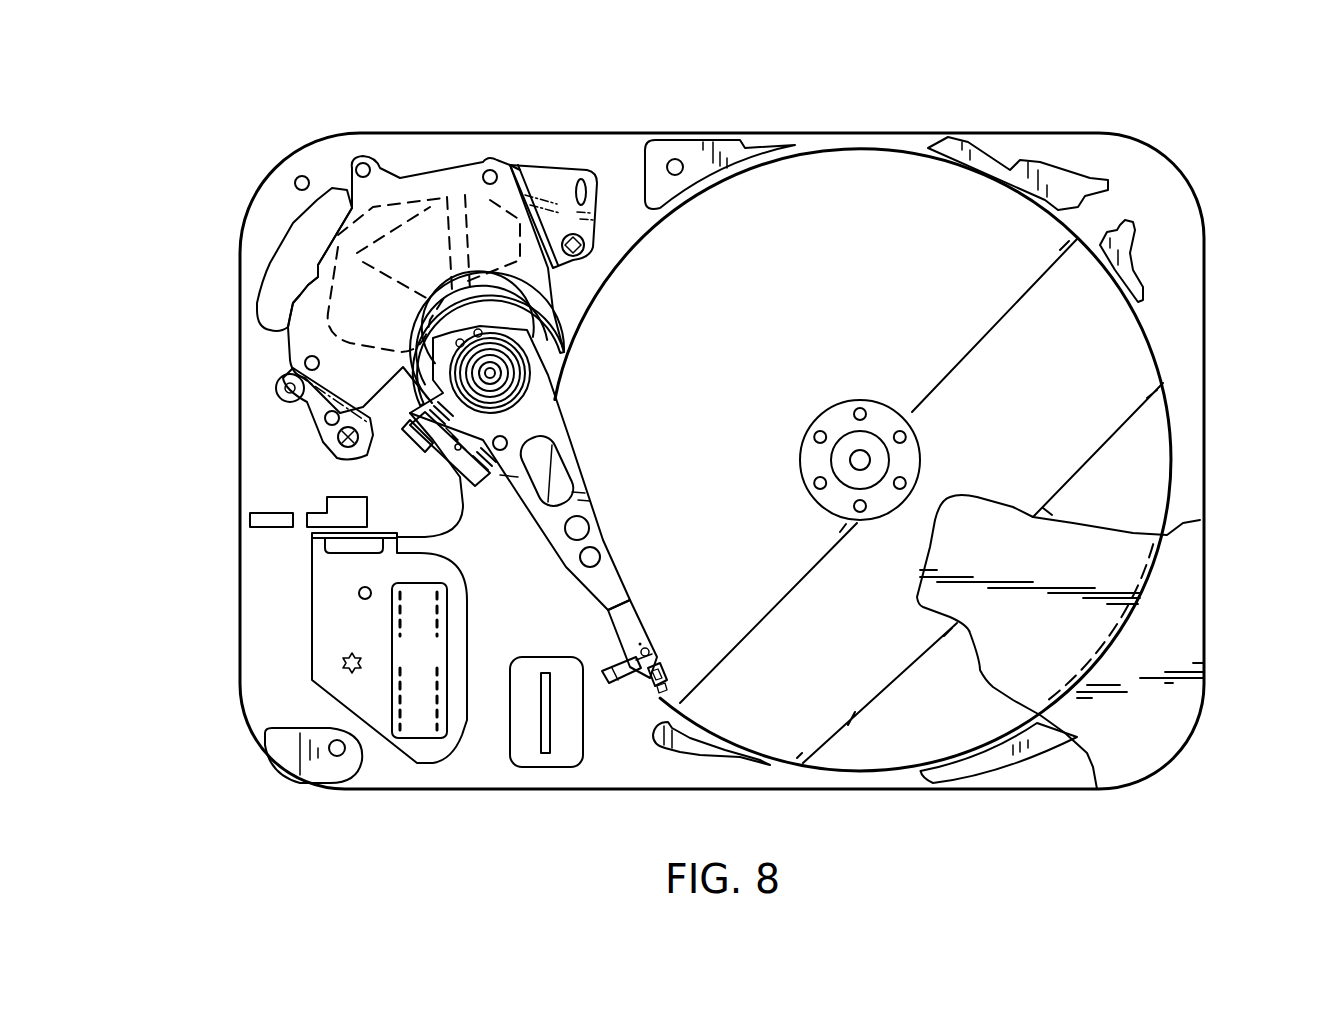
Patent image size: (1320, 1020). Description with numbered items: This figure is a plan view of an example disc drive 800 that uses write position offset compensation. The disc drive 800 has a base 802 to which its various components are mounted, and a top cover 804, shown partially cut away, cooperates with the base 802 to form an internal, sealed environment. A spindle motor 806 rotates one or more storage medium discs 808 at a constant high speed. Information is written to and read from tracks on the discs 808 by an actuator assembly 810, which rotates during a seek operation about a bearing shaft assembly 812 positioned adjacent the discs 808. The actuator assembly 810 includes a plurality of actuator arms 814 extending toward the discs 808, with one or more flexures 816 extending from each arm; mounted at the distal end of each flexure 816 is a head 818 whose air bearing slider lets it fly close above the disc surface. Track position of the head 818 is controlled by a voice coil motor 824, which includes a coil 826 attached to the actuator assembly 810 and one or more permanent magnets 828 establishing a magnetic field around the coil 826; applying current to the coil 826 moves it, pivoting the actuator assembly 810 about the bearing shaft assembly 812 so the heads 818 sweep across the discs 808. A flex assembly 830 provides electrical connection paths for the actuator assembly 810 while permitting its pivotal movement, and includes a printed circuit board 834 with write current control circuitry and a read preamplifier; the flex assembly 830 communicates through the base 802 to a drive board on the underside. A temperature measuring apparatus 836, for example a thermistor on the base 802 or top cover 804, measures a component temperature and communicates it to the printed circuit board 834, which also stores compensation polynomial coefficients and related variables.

The disc drive 800 is at (232, 112).
The base 802 is at (612, 148).
The top cover 804 is at (1175, 665).
The spindle motor 806 is at (868, 458).
The storage medium disc 808 is at (836, 205).
The actuator assembly 810 is at (592, 464).
The bearing shaft assembly 812 is at (490, 373).
The actuator arm 814 is at (600, 520).
The flexure 816 is at (640, 643).
The head 818 is at (654, 676).
The voice coil motor 824 is at (453, 162).
The coil 826 is at (375, 153).
The permanent magnet 828 is at (528, 160).
The flex assembly 830 is at (472, 538).
The printed circuit board 834 is at (327, 613).
The temperature measuring apparatus 836 is at (540, 752).